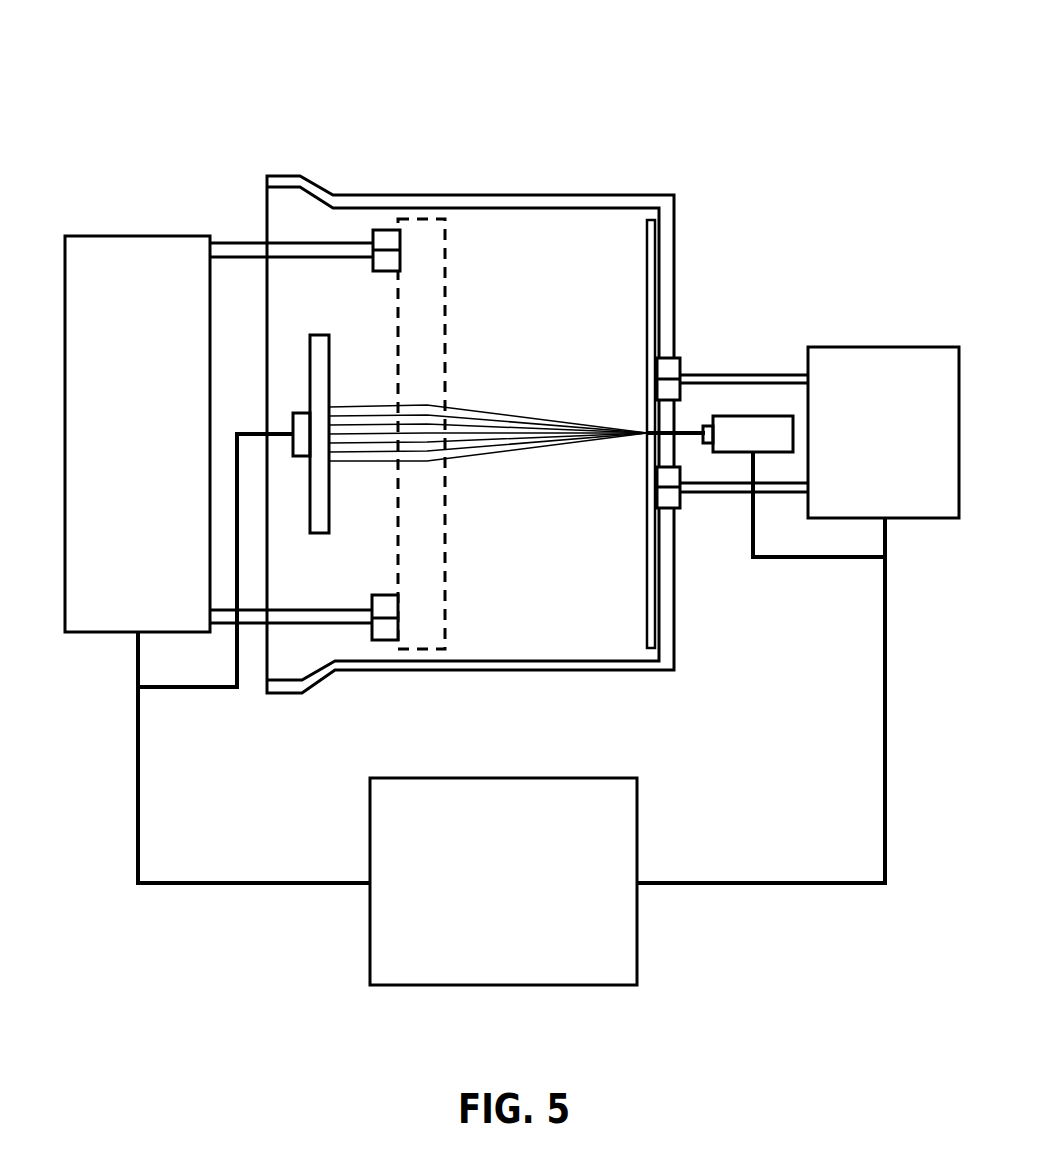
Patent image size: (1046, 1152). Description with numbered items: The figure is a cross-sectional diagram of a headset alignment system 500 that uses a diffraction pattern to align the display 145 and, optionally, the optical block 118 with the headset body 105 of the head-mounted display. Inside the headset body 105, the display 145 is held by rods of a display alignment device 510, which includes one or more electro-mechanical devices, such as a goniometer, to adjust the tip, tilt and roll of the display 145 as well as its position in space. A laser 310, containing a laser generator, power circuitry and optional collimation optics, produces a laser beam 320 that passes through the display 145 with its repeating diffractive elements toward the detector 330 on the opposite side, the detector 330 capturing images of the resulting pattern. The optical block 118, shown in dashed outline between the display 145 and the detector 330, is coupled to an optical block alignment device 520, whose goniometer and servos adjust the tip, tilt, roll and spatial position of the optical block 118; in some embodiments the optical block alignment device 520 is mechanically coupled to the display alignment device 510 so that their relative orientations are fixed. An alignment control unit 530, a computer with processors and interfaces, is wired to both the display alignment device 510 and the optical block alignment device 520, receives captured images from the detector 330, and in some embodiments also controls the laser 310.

The headset alignment system 500 is at (80, 27).
The headset body 105 is at (640, 195).
The optical block 118 is at (445, 267).
The display 145 is at (658, 617).
The laser 310 is at (755, 415).
The laser beam 320 is at (683, 430).
The detector 330 is at (308, 373).
The display alignment device 510 is at (808, 432).
The optical block alignment device 520 is at (232, 435).
The alignment control unit 530 is at (511, 709).